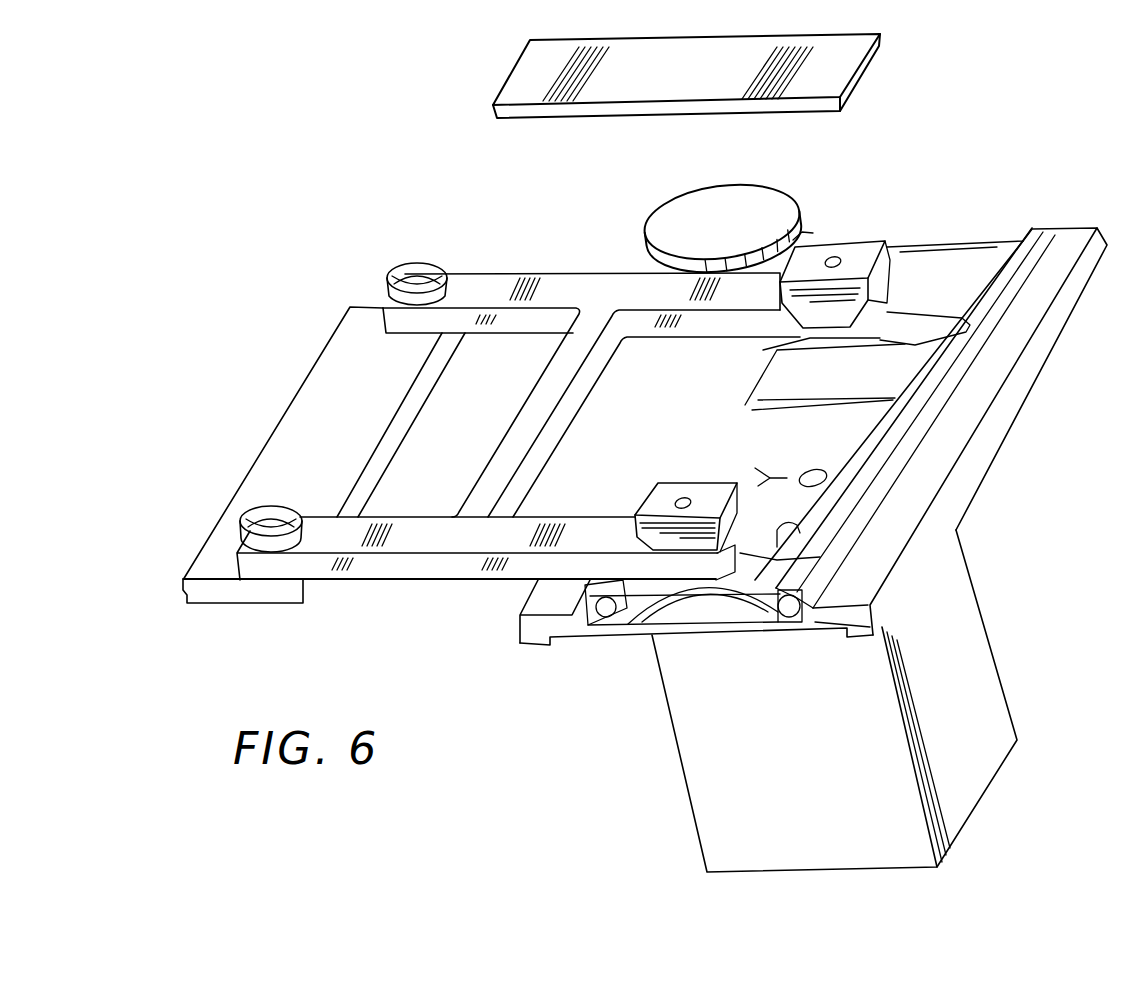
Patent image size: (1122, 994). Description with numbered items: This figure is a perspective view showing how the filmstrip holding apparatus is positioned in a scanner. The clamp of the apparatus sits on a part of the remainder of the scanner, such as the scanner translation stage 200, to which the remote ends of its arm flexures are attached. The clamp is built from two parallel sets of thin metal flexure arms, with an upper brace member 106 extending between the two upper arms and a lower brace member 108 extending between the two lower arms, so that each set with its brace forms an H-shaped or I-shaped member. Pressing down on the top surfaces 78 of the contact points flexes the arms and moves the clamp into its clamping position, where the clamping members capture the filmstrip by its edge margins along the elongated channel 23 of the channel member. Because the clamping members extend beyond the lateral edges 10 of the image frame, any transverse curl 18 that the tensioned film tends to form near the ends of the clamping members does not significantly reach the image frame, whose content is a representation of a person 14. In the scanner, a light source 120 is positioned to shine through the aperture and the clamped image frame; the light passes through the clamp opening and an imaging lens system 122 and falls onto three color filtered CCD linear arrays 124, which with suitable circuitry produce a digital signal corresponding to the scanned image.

The lateral edges 10 is at (797, 532).
The representation of a person 14 is at (803, 476).
The transverse curl 18 is at (741, 606).
The channel 23 is at (701, 600).
The top surfaces 78 is at (862, 255).
The upper brace member 106 is at (542, 403).
The lower brace member 108 is at (530, 470).
The light source 120 is at (975, 686).
The imaging lens system 122 is at (798, 198).
The color filtered CCD linear arrays 124 is at (864, 84).
The scanner translation stage 200 is at (262, 446).